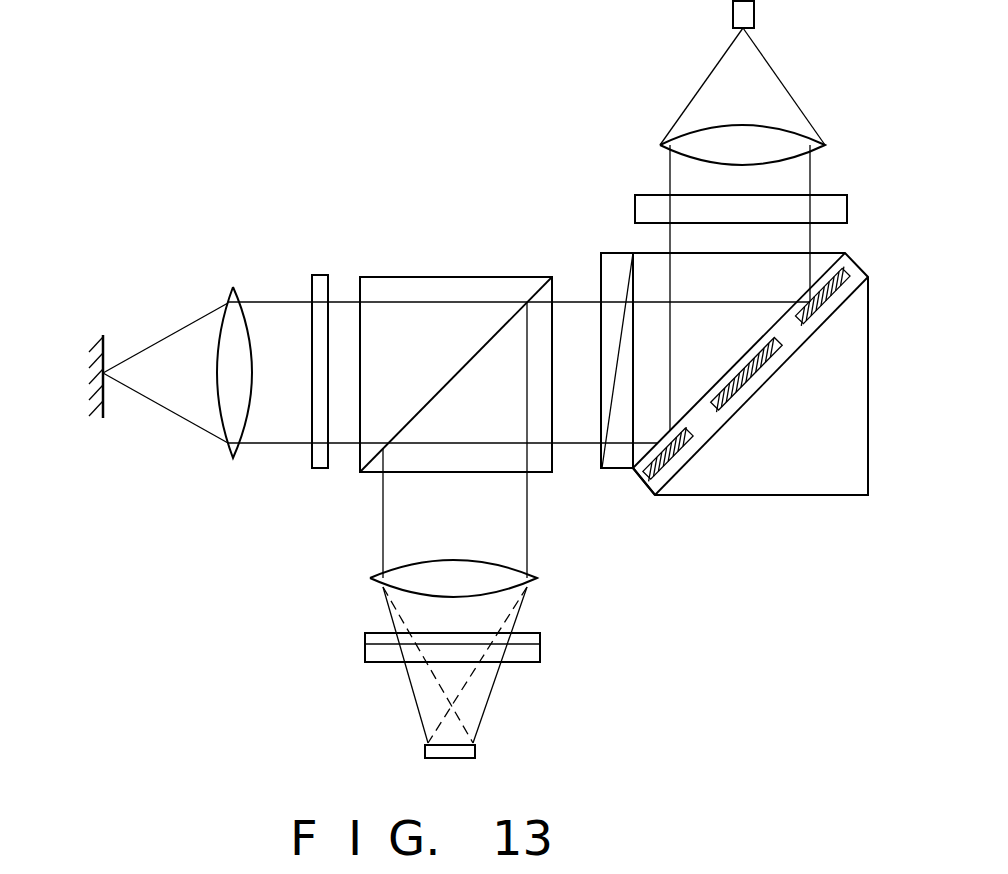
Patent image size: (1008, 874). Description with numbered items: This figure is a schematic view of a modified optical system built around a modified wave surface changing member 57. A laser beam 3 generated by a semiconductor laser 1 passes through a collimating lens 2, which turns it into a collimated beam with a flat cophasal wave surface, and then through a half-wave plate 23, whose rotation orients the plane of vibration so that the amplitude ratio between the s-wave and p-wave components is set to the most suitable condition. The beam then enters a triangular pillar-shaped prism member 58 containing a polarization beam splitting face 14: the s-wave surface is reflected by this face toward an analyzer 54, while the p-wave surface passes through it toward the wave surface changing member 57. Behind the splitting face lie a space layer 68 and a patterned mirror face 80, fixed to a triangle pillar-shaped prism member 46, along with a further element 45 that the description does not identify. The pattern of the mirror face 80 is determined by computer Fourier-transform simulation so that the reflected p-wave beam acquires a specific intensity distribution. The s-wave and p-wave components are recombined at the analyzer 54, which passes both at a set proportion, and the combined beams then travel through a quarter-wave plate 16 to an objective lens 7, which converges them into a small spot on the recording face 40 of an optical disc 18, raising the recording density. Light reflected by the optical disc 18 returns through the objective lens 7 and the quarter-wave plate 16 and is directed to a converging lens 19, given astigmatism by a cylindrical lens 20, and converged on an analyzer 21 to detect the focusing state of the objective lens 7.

The semiconductor laser 1 is at (756, 15).
The collimating lens 2 is at (820, 143).
The laser beam 3 is at (772, 103).
The λ/2 plate 23 is at (833, 202).
The analyzer 54 is at (608, 278).
The triangle pillar-shaped prism member 46 is at (852, 412).
The triangular pillar-shaped prism member 58 is at (833, 260).
The second surface of grating layer 45 is at (843, 293).
The polarization beam splitting face 14 is at (720, 382).
The mirror face 80 is at (747, 383).
The space layer 68 is at (783, 327).
The wave surface changing member 57 is at (637, 488).
The λ/4 plate 16 is at (320, 275).
The objective lens 7 is at (228, 300).
The recording face 40 is at (105, 355).
The optical disc 18 is at (82, 352).
The converging lens 19 is at (533, 578).
The cylindrical lens 20 is at (540, 643).
The analyzer 21 is at (475, 752).